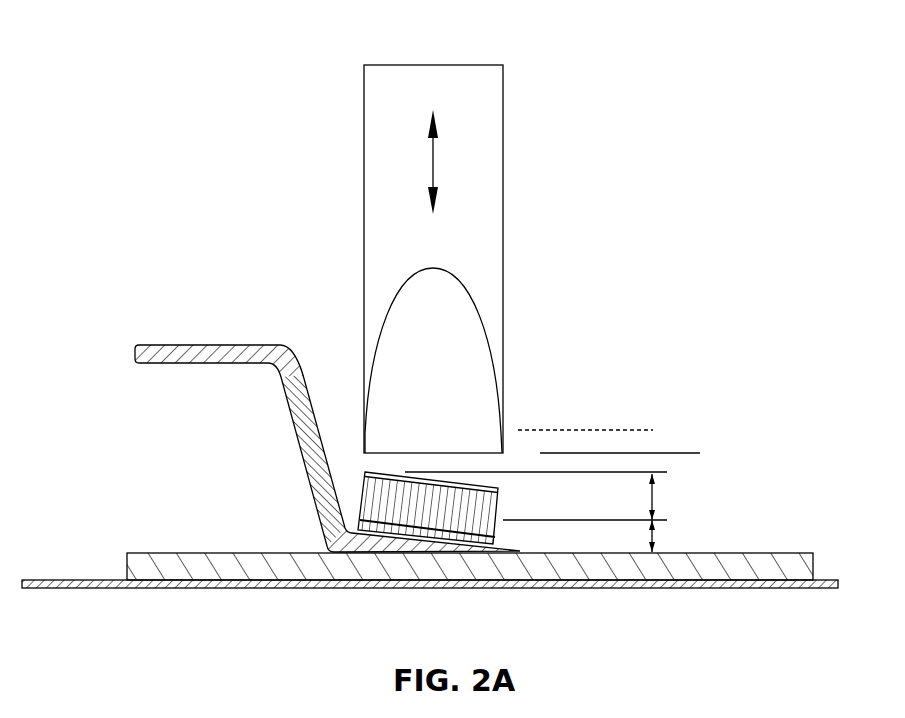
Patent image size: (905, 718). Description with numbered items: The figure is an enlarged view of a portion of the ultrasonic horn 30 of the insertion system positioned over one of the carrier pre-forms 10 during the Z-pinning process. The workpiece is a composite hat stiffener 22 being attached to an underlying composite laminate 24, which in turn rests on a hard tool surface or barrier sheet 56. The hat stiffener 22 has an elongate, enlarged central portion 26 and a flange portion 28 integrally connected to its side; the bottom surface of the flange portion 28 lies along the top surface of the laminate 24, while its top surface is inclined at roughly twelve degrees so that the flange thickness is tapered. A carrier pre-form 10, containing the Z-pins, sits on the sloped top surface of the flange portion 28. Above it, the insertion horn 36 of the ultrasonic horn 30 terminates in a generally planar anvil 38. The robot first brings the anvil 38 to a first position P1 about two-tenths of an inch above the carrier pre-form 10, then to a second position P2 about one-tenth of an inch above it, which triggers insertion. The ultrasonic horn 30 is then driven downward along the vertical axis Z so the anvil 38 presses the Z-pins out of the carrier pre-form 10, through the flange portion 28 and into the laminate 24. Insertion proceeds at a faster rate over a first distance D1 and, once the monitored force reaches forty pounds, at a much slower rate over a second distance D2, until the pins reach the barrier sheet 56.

The carrier pre-form 10 is at (510, 499).
The composite hat stiffener 22 is at (304, 465).
The composite laminate 24 is at (169, 565).
The central portion 26 is at (233, 352).
The flange portion 28 is at (392, 543).
The ultrasonic horn 30 is at (462, 251).
The insertion horn 36 is at (484, 198).
The anvil 38 is at (394, 457).
The barrier sheet 56 is at (98, 585).
The vertical axis Z is at (435, 147).
The first position P1 is at (645, 430).
The second position P2 is at (700, 453).
The first distance D1 is at (546, 496).
The second distance D2 is at (595, 536).